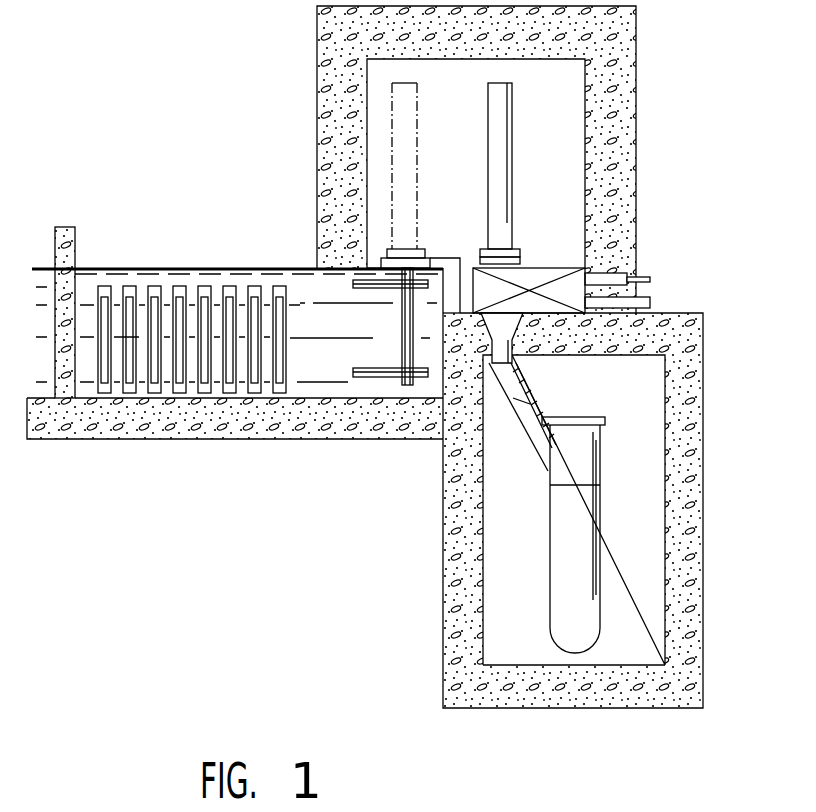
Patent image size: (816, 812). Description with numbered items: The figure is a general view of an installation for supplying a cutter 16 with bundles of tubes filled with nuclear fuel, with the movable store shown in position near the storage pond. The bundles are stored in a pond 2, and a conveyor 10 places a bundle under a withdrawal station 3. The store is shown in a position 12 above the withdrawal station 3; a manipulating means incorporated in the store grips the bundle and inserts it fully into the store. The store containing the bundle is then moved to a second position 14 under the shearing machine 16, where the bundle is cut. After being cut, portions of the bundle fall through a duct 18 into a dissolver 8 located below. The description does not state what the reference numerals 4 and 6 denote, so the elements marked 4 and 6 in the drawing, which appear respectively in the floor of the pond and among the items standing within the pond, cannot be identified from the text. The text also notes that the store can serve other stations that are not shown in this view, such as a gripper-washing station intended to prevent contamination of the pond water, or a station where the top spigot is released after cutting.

The pond 2 is at (313, 292).
The withdrawal station 3 is at (423, 260).
The floor wall 4 is at (137, 437).
The heating rods 6 is at (153, 302).
The dissolver 8 is at (580, 640).
The conveyor 10 is at (370, 373).
The position of the store above the withdrawal station 12 is at (391, 98).
The position of the store under the shearing machine 14 is at (502, 147).
The cutter 16 is at (543, 272).
The duct 18 is at (512, 401).